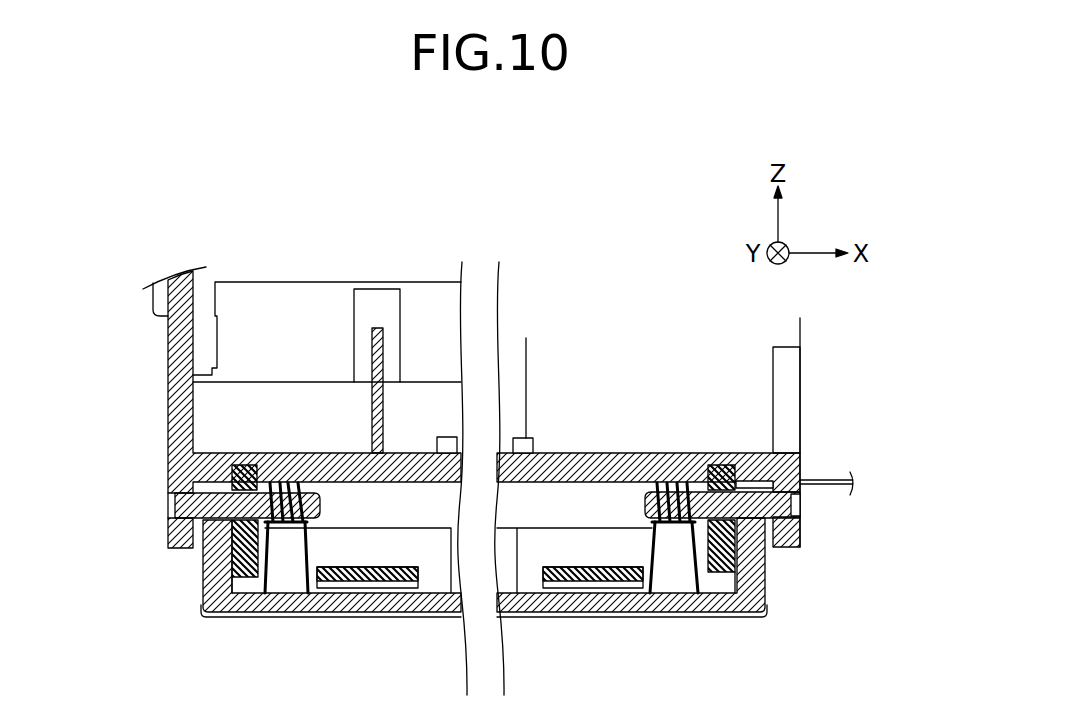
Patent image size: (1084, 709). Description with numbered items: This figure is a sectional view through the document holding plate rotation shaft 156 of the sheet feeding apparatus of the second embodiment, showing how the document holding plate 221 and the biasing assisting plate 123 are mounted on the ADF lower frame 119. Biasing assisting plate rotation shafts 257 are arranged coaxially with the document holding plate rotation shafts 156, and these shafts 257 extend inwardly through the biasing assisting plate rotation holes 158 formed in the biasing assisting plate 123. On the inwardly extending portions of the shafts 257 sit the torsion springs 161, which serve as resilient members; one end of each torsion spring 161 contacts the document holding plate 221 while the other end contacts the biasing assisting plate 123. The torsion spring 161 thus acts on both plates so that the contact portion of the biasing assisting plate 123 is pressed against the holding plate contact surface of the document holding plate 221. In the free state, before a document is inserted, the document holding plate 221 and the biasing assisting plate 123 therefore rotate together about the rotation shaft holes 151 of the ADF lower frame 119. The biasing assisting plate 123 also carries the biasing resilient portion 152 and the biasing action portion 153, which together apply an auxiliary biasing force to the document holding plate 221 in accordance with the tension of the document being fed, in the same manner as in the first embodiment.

The ADF lower frame 119 is at (168, 353).
The biasing assisting plate 123 is at (237, 463).
The rotation shaft holes 151 is at (168, 512).
The biasing resilient portion 152 is at (425, 588).
The biasing action portion 153 is at (352, 585).
The document holding plate rotation shaft 156 is at (170, 502).
The biasing assisting plate rotation holes 158 is at (240, 575).
The torsion spring 161 is at (270, 560).
The document holding plate 221 is at (208, 603).
The biasing assisting plate rotation shafts 257 is at (326, 496).